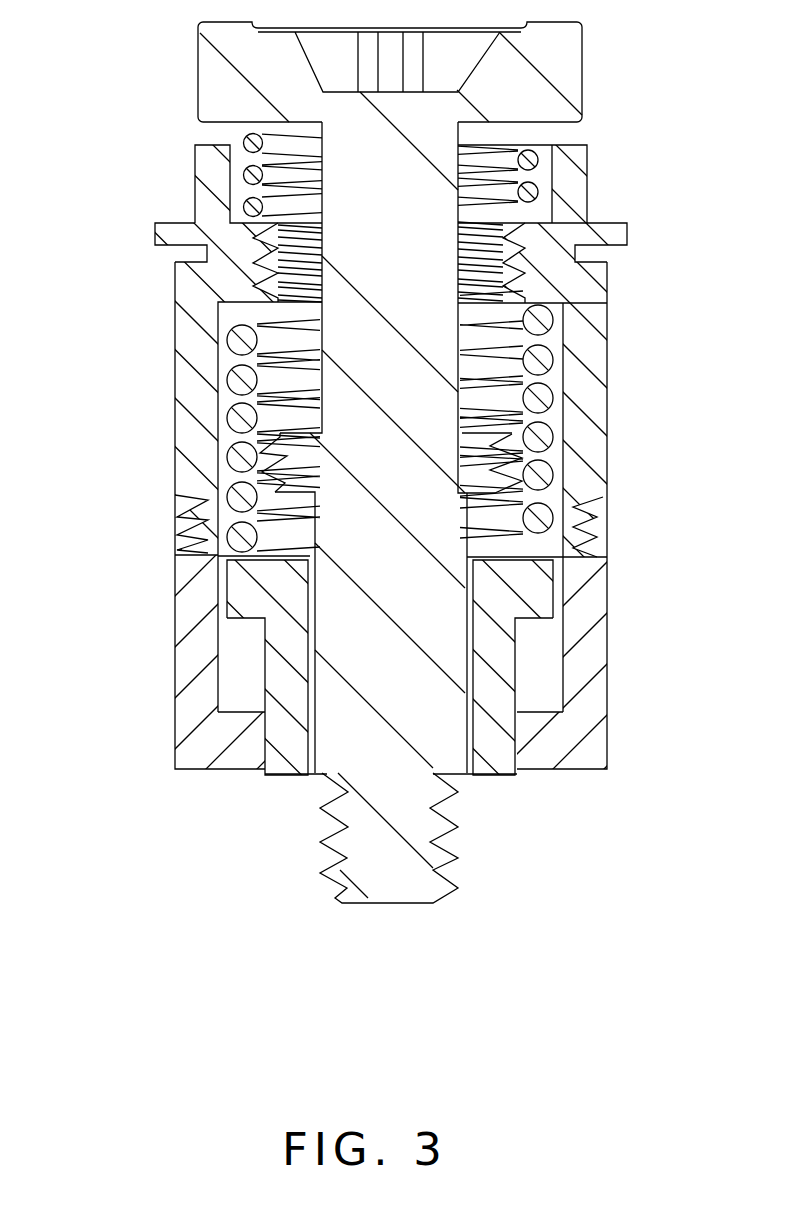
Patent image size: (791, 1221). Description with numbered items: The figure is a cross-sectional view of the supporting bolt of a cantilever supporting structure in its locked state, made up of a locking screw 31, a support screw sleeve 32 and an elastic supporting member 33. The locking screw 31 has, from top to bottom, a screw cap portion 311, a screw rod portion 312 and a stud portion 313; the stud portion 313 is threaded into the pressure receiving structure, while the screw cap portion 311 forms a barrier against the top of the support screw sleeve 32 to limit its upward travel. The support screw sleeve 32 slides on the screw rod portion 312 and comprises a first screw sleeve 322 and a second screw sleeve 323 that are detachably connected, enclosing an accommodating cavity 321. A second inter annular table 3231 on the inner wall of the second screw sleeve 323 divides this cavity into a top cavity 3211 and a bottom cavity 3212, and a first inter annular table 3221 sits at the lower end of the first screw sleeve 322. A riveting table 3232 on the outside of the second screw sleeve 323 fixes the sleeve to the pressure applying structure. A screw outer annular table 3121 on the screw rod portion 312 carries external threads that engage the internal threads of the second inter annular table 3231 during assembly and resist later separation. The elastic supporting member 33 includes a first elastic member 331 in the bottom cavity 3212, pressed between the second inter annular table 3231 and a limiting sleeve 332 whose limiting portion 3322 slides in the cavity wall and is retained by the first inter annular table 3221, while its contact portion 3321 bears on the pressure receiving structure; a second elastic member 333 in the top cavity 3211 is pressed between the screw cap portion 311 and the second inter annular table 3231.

The locking screw 31 is at (492, 909).
The screw cap portion 311 is at (556, 53).
The screw rod portion 312 is at (425, 272).
The screw outer annular table 3121 is at (473, 465).
The stud portion 313 is at (403, 853).
The support screw sleeve 32 is at (203, 846).
The accommodating cavity 321 is at (84, 188).
The top cavity 3211 is at (226, 190).
The bottom cavity 3212 is at (226, 357).
The first screw sleeve 322 is at (592, 607).
The first inter annular table 3221 is at (206, 748).
The second screw sleeve 323 is at (572, 173).
The second inter annular table 3231 is at (543, 257).
The riveting table 3232 is at (610, 230).
The elastic supporting member 33 is at (179, 102).
The first elastic member 331 is at (224, 453).
The limiting sleeve 332 is at (78, 591).
The contact portion 3321 is at (283, 672).
The limiting portion 3322 is at (245, 600).
The second elastic member 333 is at (196, 150).